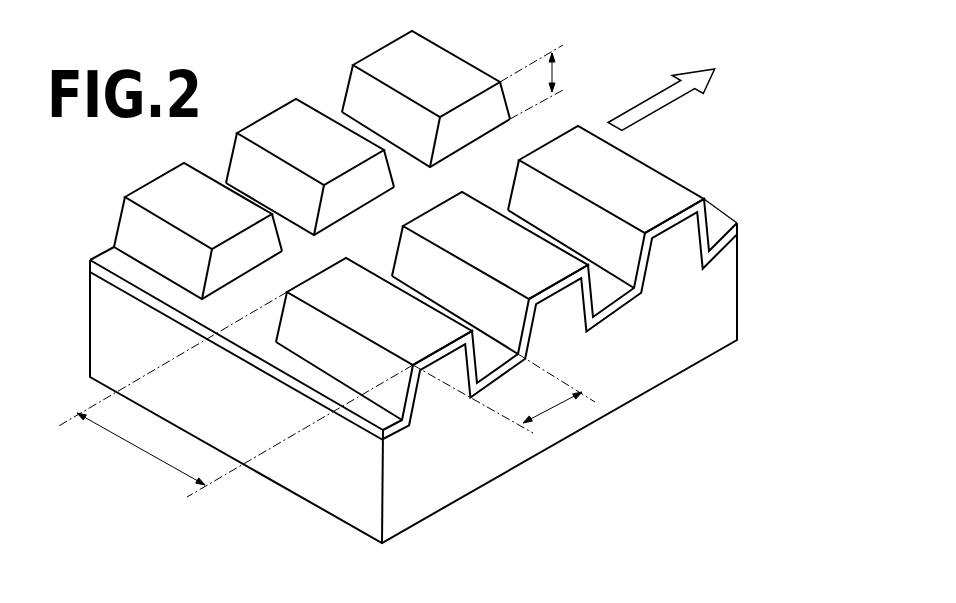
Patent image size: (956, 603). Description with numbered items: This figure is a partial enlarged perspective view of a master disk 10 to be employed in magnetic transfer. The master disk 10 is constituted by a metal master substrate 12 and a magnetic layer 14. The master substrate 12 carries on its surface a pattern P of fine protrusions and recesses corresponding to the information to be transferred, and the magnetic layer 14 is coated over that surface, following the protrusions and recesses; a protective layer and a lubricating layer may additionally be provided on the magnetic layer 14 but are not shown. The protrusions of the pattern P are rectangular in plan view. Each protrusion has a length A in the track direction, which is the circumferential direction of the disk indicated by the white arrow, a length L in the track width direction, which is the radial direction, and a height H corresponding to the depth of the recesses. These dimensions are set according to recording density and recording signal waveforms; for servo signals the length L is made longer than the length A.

The master disk 10 is at (477, 282).
The master substrate 12 is at (730, 317).
The magnetic layer 14 is at (675, 222).
The pattern of fine protrusions and recesses P is at (446, 63).
The height of the protrusions H is at (539, 82).
The length in the track width direction L is at (235, 394).
The length in the track direction A is at (504, 393).